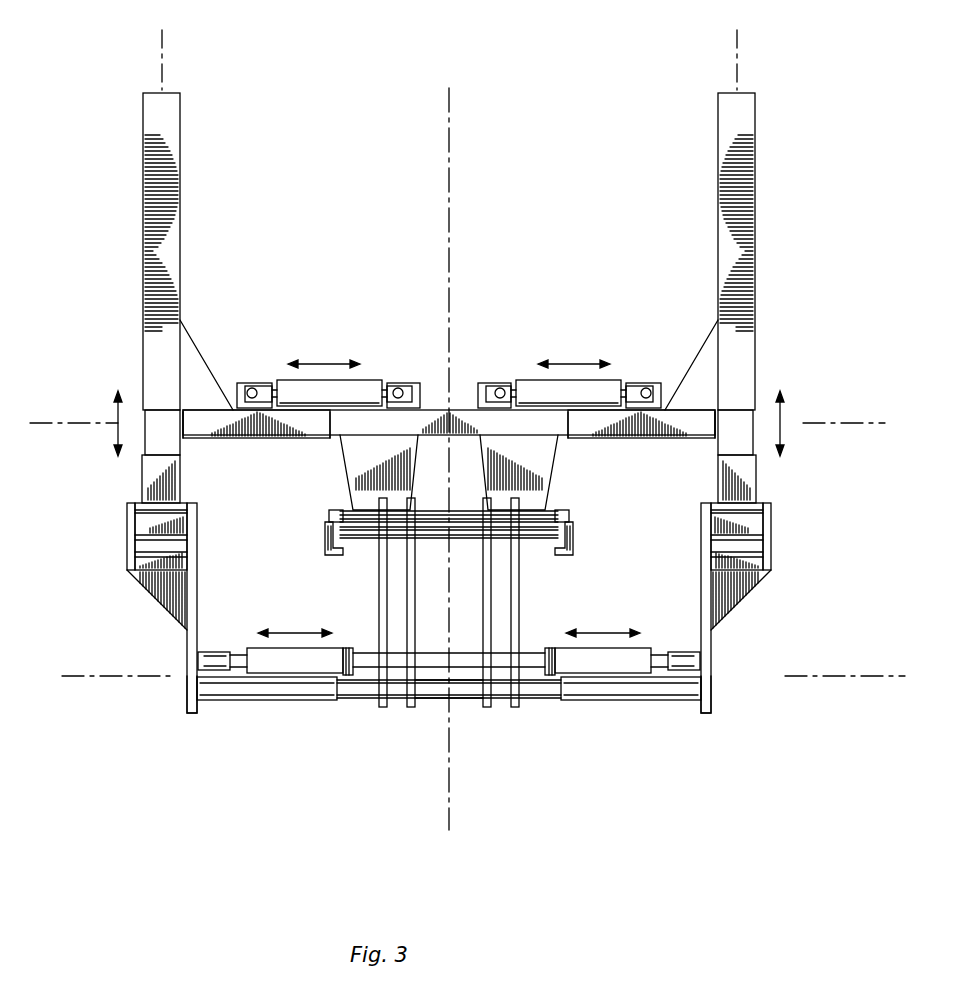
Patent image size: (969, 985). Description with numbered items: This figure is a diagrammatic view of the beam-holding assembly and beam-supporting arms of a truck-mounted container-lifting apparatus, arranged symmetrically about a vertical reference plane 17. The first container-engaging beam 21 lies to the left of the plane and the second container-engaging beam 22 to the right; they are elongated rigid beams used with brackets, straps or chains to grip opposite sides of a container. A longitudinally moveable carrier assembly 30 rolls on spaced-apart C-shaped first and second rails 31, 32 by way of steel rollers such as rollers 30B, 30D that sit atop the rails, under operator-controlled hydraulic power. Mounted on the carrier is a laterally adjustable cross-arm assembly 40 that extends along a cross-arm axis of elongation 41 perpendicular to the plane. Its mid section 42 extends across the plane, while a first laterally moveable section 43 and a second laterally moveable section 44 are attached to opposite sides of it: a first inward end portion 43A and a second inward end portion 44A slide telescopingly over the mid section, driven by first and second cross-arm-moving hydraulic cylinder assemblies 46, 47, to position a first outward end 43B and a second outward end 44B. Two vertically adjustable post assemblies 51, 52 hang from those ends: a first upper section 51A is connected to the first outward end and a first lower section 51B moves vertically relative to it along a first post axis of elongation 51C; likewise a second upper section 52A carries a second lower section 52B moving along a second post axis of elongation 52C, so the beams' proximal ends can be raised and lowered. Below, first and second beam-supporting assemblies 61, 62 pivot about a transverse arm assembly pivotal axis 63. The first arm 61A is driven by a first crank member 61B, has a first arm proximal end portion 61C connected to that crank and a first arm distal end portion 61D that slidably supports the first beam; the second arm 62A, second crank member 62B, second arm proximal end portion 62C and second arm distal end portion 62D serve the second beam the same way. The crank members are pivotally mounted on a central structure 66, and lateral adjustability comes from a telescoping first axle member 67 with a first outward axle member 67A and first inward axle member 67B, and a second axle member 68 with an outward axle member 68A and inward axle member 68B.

The vertical reference plane 17 is at (452, 106).
The first container-engaging beam 21 is at (152, 466).
The second container-engaging beam 22 is at (748, 466).
The carrier assembly 30 is at (462, 510).
The steel roller 30B is at (333, 511).
The steel roller 30D is at (565, 511).
The first rail 31 is at (327, 547).
The second rail 32 is at (571, 547).
The cross-arm assembly 40 is at (440, 408).
The cross-arm axis of elongation 41 is at (35, 428).
The mid section 42 is at (410, 422).
The first laterally moveable section 43 is at (215, 414).
The first inward end portion 43A is at (323, 438).
The first outward end 43B is at (190, 436).
The second laterally moveable section 44 is at (682, 414).
The second inward end portion 44A is at (573, 438).
The second outward end 44B is at (708, 436).
The first cross-arm-moving hydraulic cylinder assembly 46 is at (283, 382).
The second cross-arm-moving hydraulic cylinder assembly 47 is at (613, 382).
The first vertically adjustable post assembly 51 is at (141, 106).
The first upper section 51A is at (150, 257).
The first lower section 51B is at (162, 423).
The first post axis of elongation 51C is at (162, 32).
The second vertically adjustable post assembly 52 is at (757, 106).
The second upper section 52A is at (750, 257).
The second lower section 52B is at (738, 423).
The second post axis of elongation 52C is at (737, 32).
The first beam-supporting assembly 61 is at (141, 580).
The first arm 61A is at (198, 577).
The first crank member 61B is at (379, 578).
The first arm proximal end portion 61C is at (188, 692).
The first arm distal end portion 61D is at (128, 538).
The second beam-supporting assembly 62 is at (757, 580).
The second arm 62A is at (701, 577).
The second crank member 62B is at (519, 578).
The second arm proximal end portion 62C is at (710, 692).
The second arm distal end portion 62D is at (771, 538).
The arm assembly pivotal axis 63 is at (63, 676).
The central structure 66 is at (456, 678).
The first axle member 67 is at (267, 701).
The first outward axle member 67A is at (220, 692).
The first inward axle member 67B is at (355, 690).
The second axle member 68 is at (631, 701).
The outward axle member 68A is at (678, 692).
The inward axle member 68B is at (543, 690).